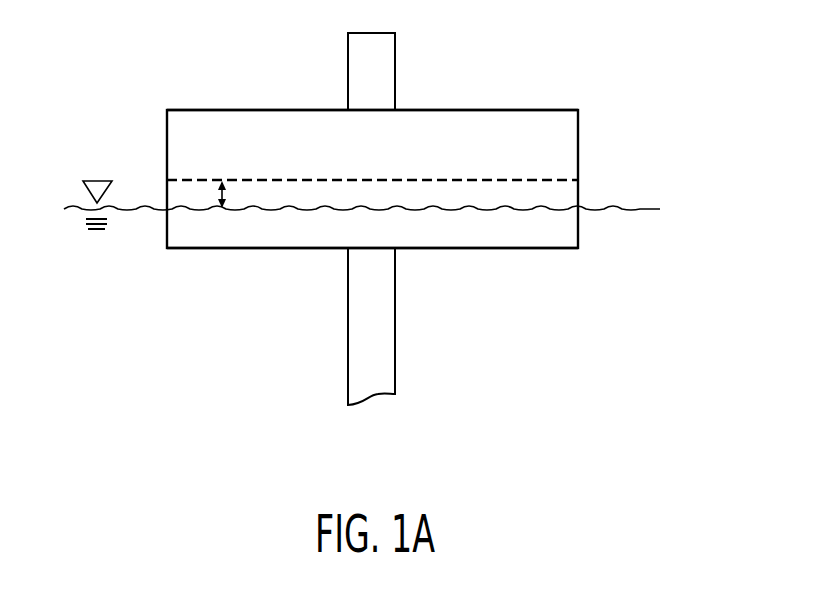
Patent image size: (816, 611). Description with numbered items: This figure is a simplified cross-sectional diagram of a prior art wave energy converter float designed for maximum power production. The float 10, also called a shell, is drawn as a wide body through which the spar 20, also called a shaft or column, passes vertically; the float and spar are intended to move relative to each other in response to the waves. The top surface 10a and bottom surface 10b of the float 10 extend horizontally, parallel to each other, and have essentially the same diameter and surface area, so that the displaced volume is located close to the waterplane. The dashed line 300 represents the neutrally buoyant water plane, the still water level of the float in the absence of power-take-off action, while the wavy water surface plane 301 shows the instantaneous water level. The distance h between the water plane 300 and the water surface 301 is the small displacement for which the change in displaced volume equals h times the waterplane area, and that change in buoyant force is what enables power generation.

The float 10 is at (233, 109).
The top surface 10a is at (527, 109).
The bottom surface 10b is at (507, 249).
The spar 20 is at (388, 53).
The water plane 300 is at (552, 180).
The water surface plane 301 is at (634, 212).
The displacement distance h is at (218, 193).